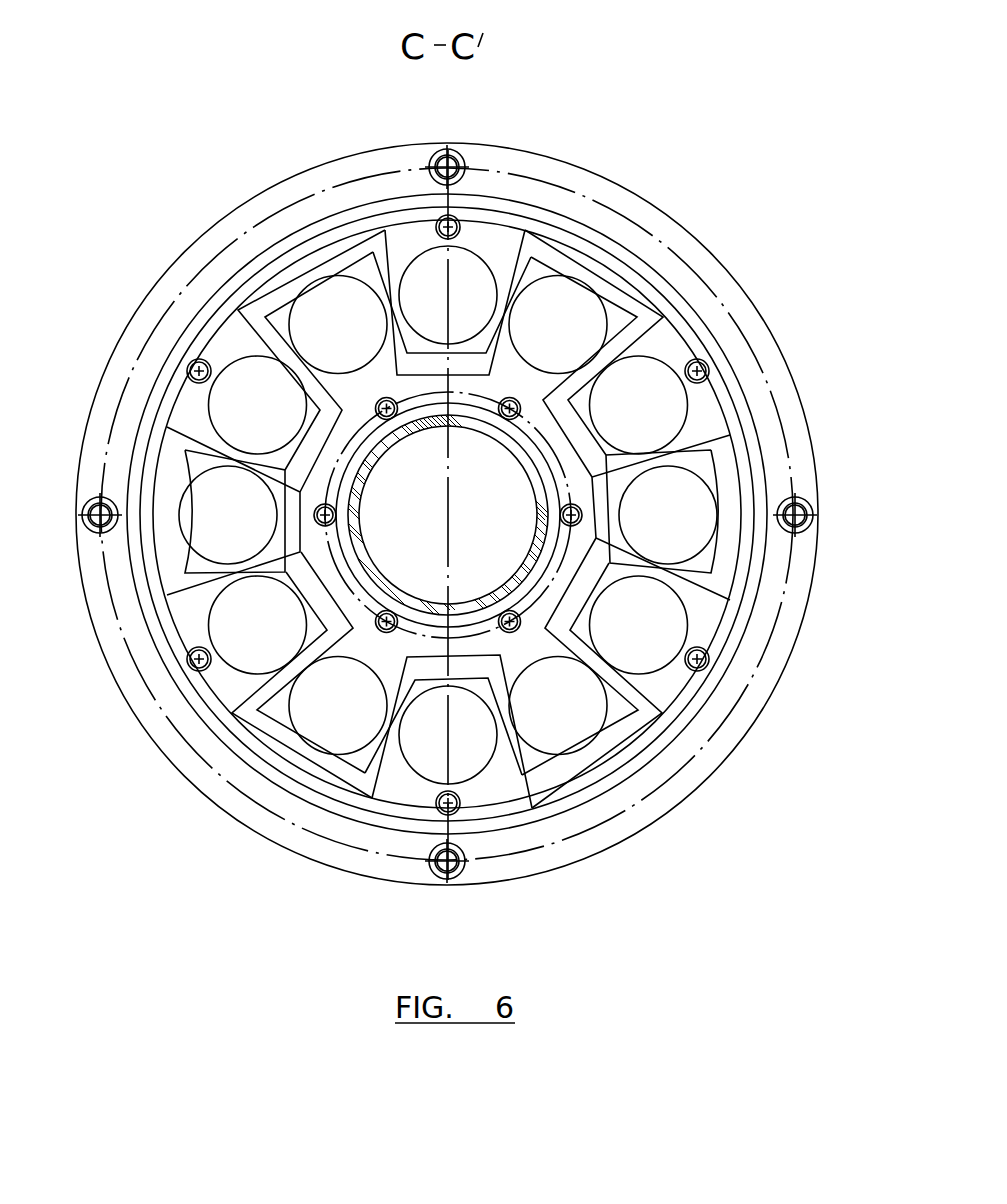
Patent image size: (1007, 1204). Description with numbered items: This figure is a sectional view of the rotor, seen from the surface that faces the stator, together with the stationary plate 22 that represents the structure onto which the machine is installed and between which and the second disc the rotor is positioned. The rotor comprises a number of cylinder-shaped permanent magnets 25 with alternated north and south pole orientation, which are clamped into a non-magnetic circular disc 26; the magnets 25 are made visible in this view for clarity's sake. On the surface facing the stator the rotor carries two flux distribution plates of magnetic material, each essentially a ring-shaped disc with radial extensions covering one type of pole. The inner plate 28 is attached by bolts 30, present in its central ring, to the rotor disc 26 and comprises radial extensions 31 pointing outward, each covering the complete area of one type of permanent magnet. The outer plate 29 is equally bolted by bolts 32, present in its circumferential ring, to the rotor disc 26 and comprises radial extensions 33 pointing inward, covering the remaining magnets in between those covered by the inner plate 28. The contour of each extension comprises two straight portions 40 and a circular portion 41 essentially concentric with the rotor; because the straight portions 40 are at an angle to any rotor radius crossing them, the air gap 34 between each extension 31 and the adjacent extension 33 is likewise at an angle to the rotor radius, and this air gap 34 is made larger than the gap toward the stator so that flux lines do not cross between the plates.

The stationary plate 22 is at (640, 762).
The permanent magnets 25 is at (359, 339).
The non-magnetic circular disc 26 is at (558, 770).
The inner flux distribution plate 28 is at (478, 389).
The outer flux distribution plate 29 is at (493, 240).
The bolts 30 is at (518, 627).
The radial extensions 31 is at (535, 270).
The bolts 32 is at (200, 362).
The radial extensions 33 is at (583, 397).
The air gap 34 is at (612, 566).
The straight portions 40 is at (606, 452).
The circular portion 41 is at (720, 553).